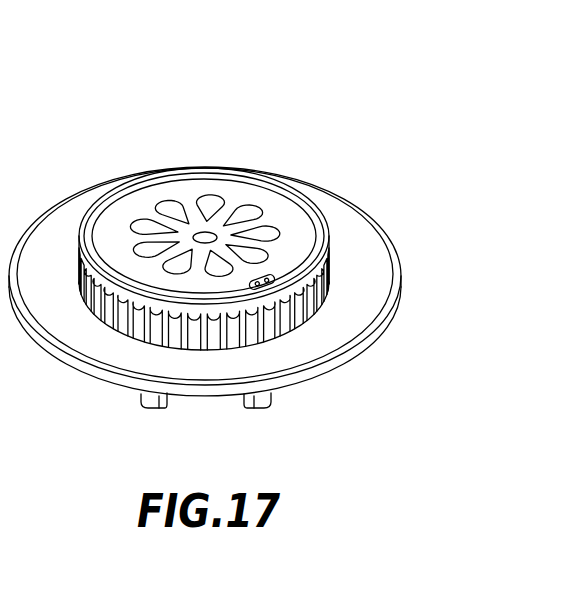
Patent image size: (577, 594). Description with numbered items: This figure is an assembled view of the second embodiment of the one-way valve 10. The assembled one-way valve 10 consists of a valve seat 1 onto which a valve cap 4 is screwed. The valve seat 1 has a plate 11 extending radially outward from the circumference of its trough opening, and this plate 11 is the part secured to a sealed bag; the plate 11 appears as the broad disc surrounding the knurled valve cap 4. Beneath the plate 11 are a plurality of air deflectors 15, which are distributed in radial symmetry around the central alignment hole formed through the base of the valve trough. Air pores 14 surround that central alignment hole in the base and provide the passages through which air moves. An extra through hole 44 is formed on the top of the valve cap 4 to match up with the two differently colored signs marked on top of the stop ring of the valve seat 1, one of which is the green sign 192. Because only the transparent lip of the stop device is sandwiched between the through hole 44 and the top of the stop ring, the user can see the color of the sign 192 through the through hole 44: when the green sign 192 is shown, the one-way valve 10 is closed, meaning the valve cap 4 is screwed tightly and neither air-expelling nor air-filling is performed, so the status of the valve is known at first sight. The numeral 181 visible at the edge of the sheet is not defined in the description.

The one-way valve 10 is at (257, 95).
The plate 11 is at (63, 218).
The air deflectors 15 is at (133, 397).
The valve cap 4 is at (260, 193).
The through hole 44 is at (312, 200).
The air pores 14 is at (201, 196).
The sign 192 is at (318, 305).
The valve seat 1 is at (35, 519).
The adjacent figure element 181 is at (14, 498).